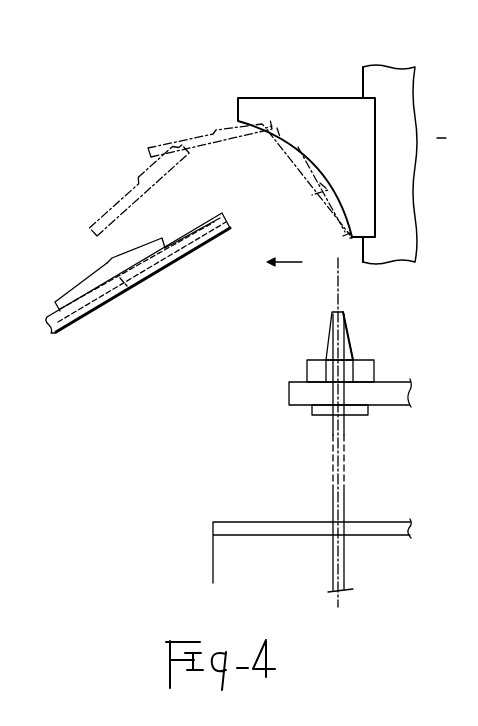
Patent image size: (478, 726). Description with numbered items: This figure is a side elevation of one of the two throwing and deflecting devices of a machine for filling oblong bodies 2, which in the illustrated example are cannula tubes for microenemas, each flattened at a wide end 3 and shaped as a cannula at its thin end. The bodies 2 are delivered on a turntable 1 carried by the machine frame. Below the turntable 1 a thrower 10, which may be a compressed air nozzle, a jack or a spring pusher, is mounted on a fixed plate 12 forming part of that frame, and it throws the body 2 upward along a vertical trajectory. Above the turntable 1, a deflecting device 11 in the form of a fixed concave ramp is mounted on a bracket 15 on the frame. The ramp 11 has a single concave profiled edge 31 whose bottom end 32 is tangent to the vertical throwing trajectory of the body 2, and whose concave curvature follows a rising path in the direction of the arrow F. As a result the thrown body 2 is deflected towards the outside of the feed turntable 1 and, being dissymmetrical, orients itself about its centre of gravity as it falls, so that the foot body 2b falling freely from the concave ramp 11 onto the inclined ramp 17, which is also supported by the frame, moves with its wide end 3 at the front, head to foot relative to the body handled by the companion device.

The turntable 1 is at (388, 387).
The oblong body 2 is at (348, 328).
The foot body 2b is at (143, 236).
The wide end 3 is at (134, 259).
The thrower 10 is at (342, 500).
The deflecting device 11 is at (290, 118).
The fixed plate 12 is at (388, 527).
The bracket 15 is at (406, 124).
The inclined ramp 17 is at (122, 295).
The concave profiled edge 31 is at (300, 143).
The bottom end 32 is at (351, 238).
The arrow F is at (291, 262).